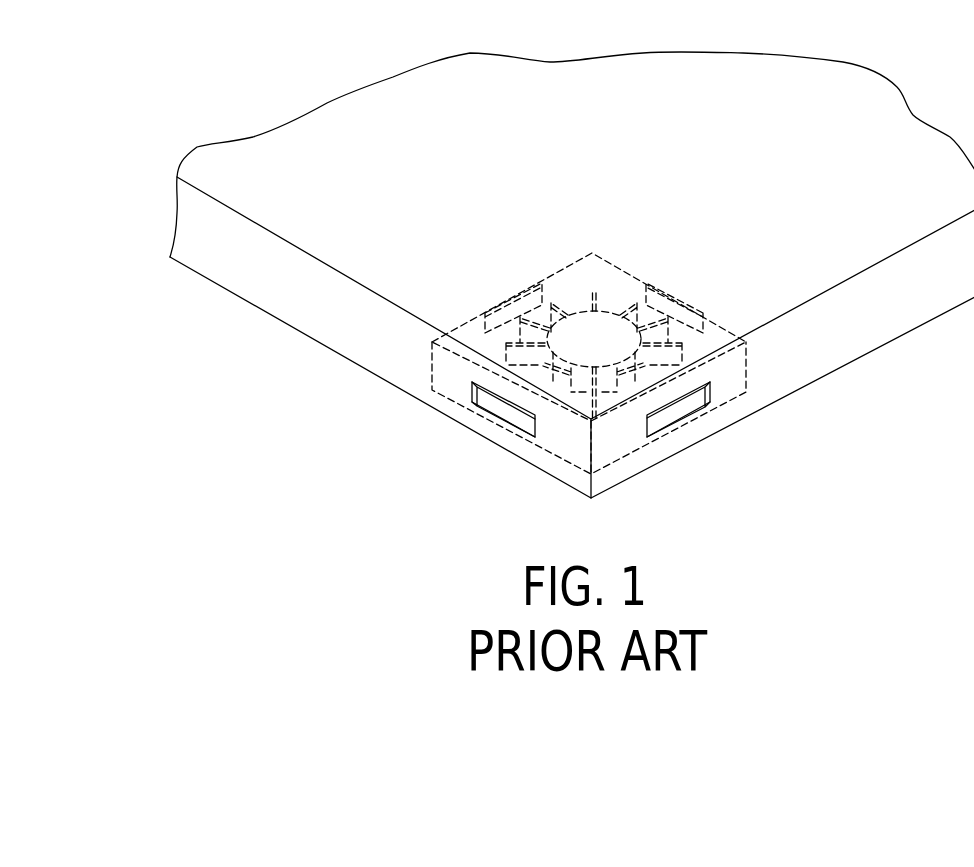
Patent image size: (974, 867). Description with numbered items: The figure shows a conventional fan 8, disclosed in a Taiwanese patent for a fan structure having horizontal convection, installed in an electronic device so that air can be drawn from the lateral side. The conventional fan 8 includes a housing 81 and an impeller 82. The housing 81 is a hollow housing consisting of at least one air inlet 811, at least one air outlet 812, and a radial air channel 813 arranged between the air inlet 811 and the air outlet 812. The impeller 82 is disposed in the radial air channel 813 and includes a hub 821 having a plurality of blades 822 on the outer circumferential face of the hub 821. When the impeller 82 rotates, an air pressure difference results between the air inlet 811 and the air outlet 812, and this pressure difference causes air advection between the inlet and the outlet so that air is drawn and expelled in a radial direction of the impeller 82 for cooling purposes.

The conventional fan 8 is at (788, 354).
The housing 81 is at (748, 374).
The air inlet 811 is at (683, 408).
The air outlet 812 is at (497, 403).
The radial air channel 813 is at (609, 412).
The impeller 82 is at (594, 265).
The hub 821 is at (576, 330).
The blades 822 is at (632, 312).